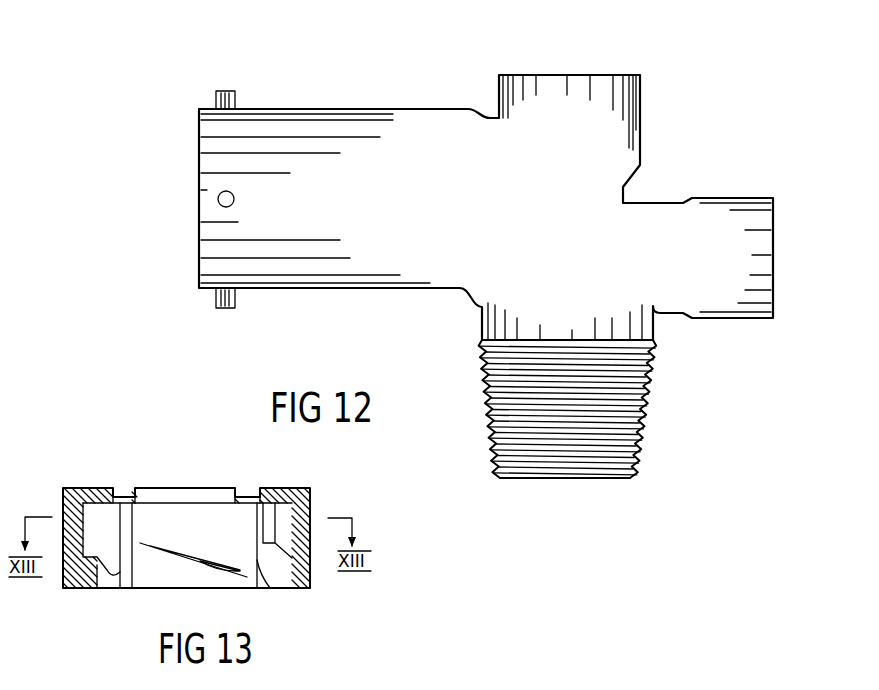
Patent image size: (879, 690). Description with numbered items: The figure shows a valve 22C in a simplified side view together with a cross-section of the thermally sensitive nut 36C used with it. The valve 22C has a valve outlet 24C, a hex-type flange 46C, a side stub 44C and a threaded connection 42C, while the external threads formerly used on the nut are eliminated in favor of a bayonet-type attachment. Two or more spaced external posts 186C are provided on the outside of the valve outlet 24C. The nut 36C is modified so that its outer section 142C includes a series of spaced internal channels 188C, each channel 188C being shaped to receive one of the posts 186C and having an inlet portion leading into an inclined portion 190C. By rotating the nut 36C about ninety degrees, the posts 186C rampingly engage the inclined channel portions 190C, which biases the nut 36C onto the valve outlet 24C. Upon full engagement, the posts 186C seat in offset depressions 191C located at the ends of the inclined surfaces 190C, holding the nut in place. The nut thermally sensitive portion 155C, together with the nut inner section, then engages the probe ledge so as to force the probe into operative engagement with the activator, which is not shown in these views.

In FIG. 12, the valve body 22C is at (556, 62).
In FIG. 12, the valve outlet 24C is at (297, 290).
In FIG. 12, the external posts 186C is at (225, 91).
In FIG. 12, the hex flange 46C is at (642, 107).
In FIG. 12, the outlet stub 44C is at (748, 197).
In FIG. 12, the threaded inlet 42C is at (640, 418).
In FIG. 13, the nut 36C is at (318, 494).
In FIG. 13, the nut thermally sensitive portion 155C is at (126, 495).
In FIG. 13, the internal channels 188C is at (108, 583).
In FIG. 13, the inclined channel portions 190C is at (112, 562).
In FIG. 13, the offset depressions 191C is at (247, 577).
In FIG. 13, the outer section 142C is at (304, 594).